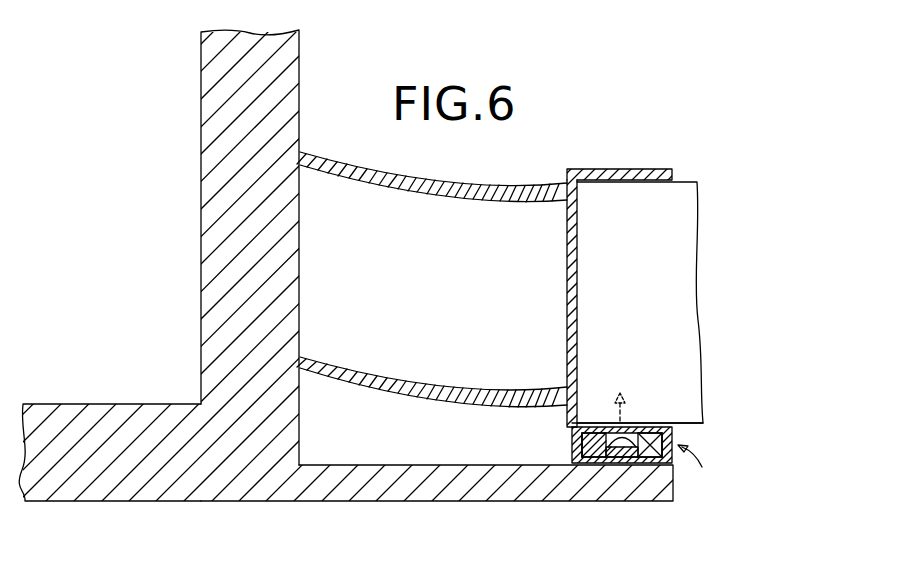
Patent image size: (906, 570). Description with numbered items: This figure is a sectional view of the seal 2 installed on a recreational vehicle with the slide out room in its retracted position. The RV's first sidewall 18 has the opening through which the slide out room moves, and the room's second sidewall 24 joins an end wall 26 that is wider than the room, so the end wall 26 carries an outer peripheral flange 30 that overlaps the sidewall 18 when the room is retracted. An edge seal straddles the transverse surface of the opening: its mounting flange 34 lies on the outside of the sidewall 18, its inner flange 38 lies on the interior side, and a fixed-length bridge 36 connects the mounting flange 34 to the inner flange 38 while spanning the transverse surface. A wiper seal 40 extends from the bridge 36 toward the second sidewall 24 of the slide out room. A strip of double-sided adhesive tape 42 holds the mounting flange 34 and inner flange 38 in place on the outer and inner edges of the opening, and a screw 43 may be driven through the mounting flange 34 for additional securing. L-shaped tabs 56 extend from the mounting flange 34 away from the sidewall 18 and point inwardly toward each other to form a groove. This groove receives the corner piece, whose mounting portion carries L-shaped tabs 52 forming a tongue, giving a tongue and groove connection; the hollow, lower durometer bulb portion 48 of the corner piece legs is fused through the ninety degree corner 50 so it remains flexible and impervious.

The seal 2 is at (695, 471).
The sidewall 18 is at (708, 423).
The second sidewall 24 is at (300, 253).
The end wall 26 is at (147, 495).
The outer peripheral flange 30 is at (433, 497).
The mounting flange 34 is at (572, 440).
The bridge 36 is at (567, 296).
The inner flange 38 is at (593, 167).
The wiper seal 40 is at (430, 203).
The adhesive tape 42 is at (630, 181).
The screw 43 is at (625, 465).
The bulb portion 48 is at (600, 463).
The corner 50 is at (663, 422).
The L-shaped tabs 52 is at (597, 422).
The L-shaped tabs 56 is at (563, 452).